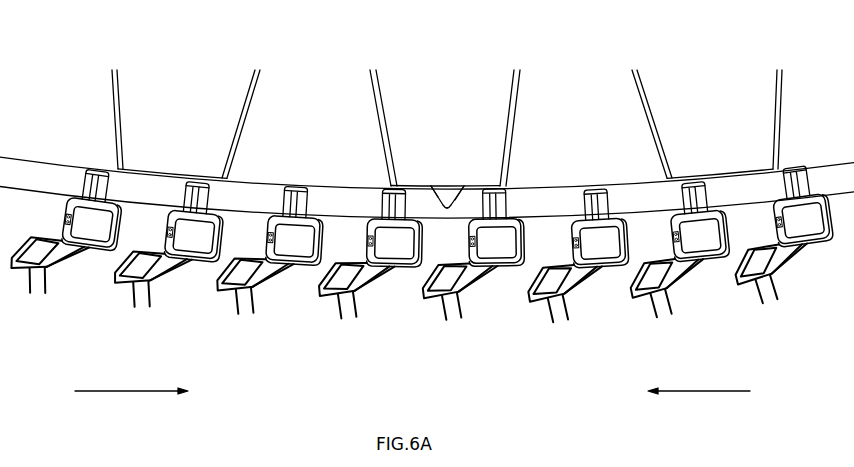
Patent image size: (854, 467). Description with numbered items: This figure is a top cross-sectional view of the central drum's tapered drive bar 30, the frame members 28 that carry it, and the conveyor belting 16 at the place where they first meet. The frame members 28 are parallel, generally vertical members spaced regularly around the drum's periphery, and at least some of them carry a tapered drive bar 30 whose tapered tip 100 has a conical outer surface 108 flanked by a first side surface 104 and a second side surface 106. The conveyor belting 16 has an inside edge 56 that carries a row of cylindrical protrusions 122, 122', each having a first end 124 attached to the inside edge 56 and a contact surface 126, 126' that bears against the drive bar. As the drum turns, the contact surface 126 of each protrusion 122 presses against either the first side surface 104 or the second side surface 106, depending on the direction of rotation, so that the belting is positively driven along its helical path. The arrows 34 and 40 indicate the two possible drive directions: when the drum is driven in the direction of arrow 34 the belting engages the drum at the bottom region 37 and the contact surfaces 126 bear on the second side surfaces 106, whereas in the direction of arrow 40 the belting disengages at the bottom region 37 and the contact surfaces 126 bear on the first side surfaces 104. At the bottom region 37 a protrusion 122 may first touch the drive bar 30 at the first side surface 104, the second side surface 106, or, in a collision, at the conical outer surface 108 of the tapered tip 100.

The conveyor belting 16 is at (112, 273).
The frame member 28 is at (508, 165).
The tapered drive bar 30 is at (447, 200).
The arrow 34 is at (131, 382).
The bottom region 37 is at (398, 189).
The arrow 40 is at (712, 391).
The inside edge 56 is at (208, 280).
The tapered tip 100 is at (503, 192).
The first side surface 104 is at (432, 192).
The second side surface 106 is at (451, 203).
The conical outer surface 108 is at (446, 206).
The protrusion 122 is at (336, 313).
The protrusion 122' is at (509, 308).
The first end 124 is at (396, 193).
The contact surface 126 is at (328, 265).
The contact surface 126' is at (551, 268).